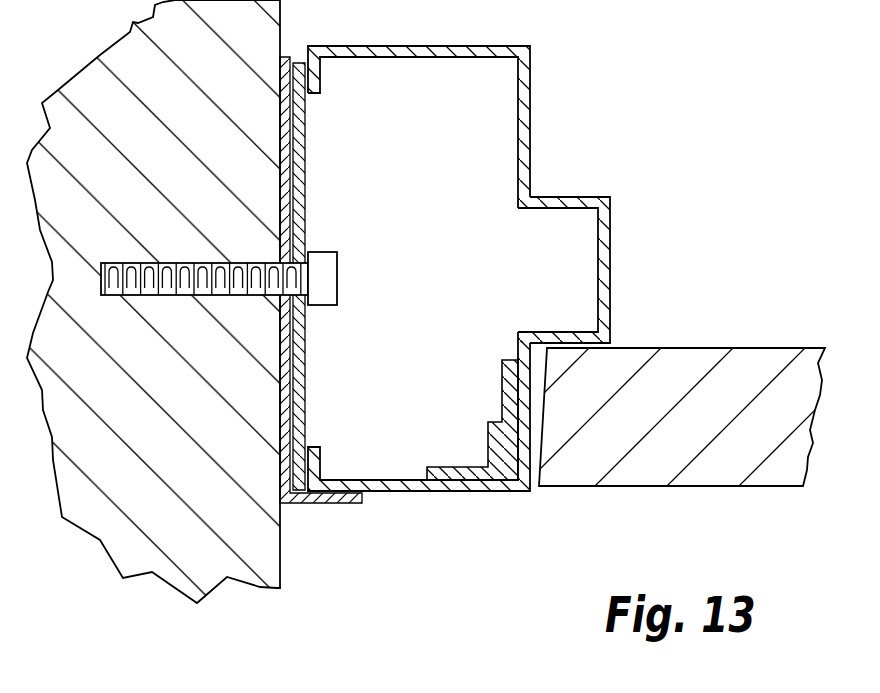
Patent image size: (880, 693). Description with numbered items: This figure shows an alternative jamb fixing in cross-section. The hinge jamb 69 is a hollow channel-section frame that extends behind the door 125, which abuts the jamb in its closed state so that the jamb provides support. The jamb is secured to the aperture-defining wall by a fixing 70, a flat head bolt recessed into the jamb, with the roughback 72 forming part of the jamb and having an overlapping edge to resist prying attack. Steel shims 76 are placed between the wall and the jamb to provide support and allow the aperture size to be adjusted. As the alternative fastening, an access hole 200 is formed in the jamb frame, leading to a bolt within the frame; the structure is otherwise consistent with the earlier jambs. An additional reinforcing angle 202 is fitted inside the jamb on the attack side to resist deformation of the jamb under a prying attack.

The hinge jamb 69 is at (584, 73).
The fixings 70 is at (231, 282).
The roughback 72 is at (340, 503).
The steel shims 76 is at (305, 412).
The access hole 200 is at (613, 268).
The reinforcing angles 202 is at (488, 481).
The door 125 is at (603, 457).